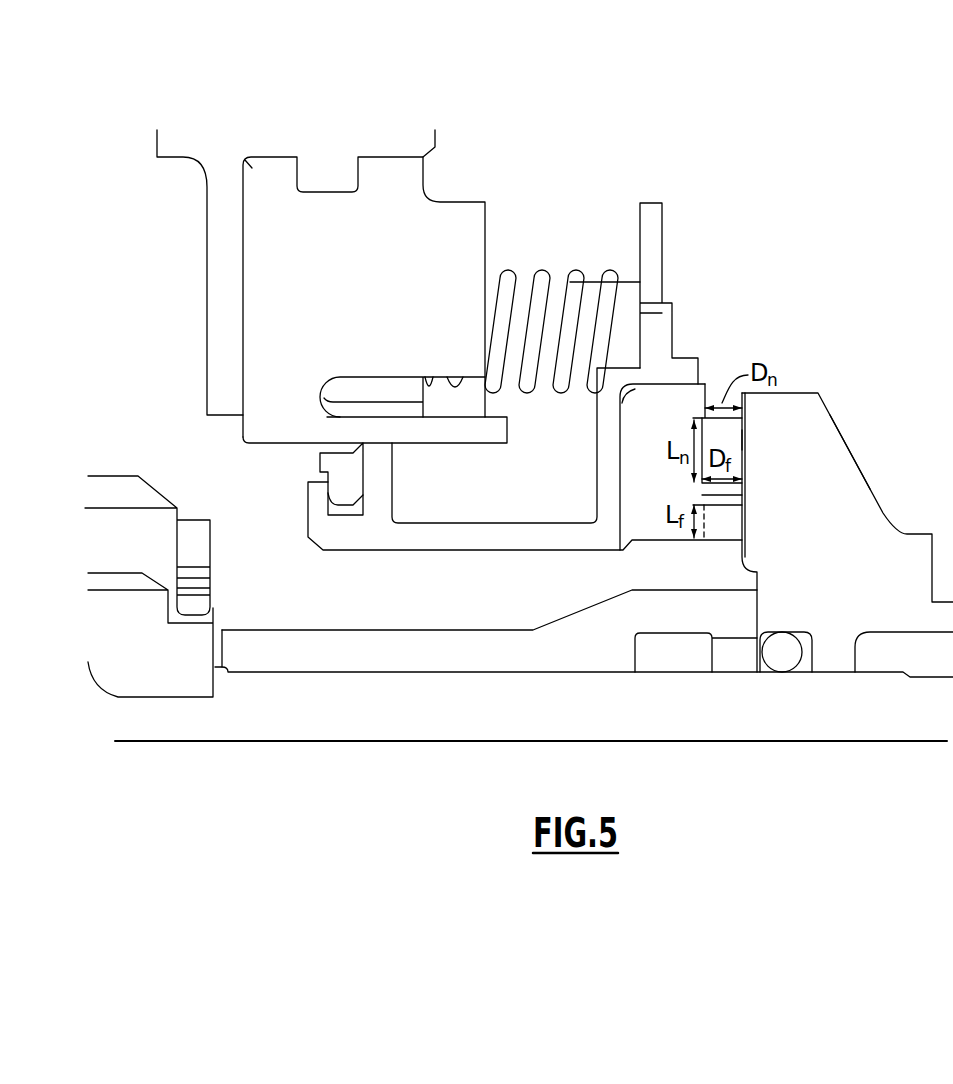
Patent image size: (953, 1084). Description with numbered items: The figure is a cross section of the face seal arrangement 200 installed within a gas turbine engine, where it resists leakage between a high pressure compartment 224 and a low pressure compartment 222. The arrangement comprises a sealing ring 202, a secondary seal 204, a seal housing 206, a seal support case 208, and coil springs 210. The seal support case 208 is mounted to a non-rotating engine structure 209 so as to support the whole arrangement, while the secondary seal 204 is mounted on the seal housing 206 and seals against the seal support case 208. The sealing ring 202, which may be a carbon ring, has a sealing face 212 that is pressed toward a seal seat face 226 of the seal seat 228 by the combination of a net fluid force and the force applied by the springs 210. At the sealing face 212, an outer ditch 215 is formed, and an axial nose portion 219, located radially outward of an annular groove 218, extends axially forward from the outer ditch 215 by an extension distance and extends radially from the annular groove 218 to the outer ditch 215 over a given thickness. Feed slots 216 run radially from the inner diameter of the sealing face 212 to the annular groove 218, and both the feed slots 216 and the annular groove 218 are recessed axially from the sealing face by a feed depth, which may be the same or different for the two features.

The face seal arrangement 200 is at (784, 172).
The sealing ring 202 is at (653, 522).
The secondary seal 204 is at (337, 475).
The seal housing 206 is at (482, 533).
The seal support case 208 is at (262, 425).
The non-rotating engine structure 209 is at (220, 275).
The coil springs 210 is at (553, 272).
The sealing face 212 is at (752, 474).
The outer ditch 215 is at (707, 398).
The feed slots 216 is at (730, 527).
The annular groove 218 is at (735, 495).
The axial nose portion 219 is at (728, 452).
The low pressure compartment 222 is at (905, 353).
The high pressure compartment 224 is at (428, 605).
The seal seat face 226 is at (730, 442).
The seal seat 228 is at (850, 510).